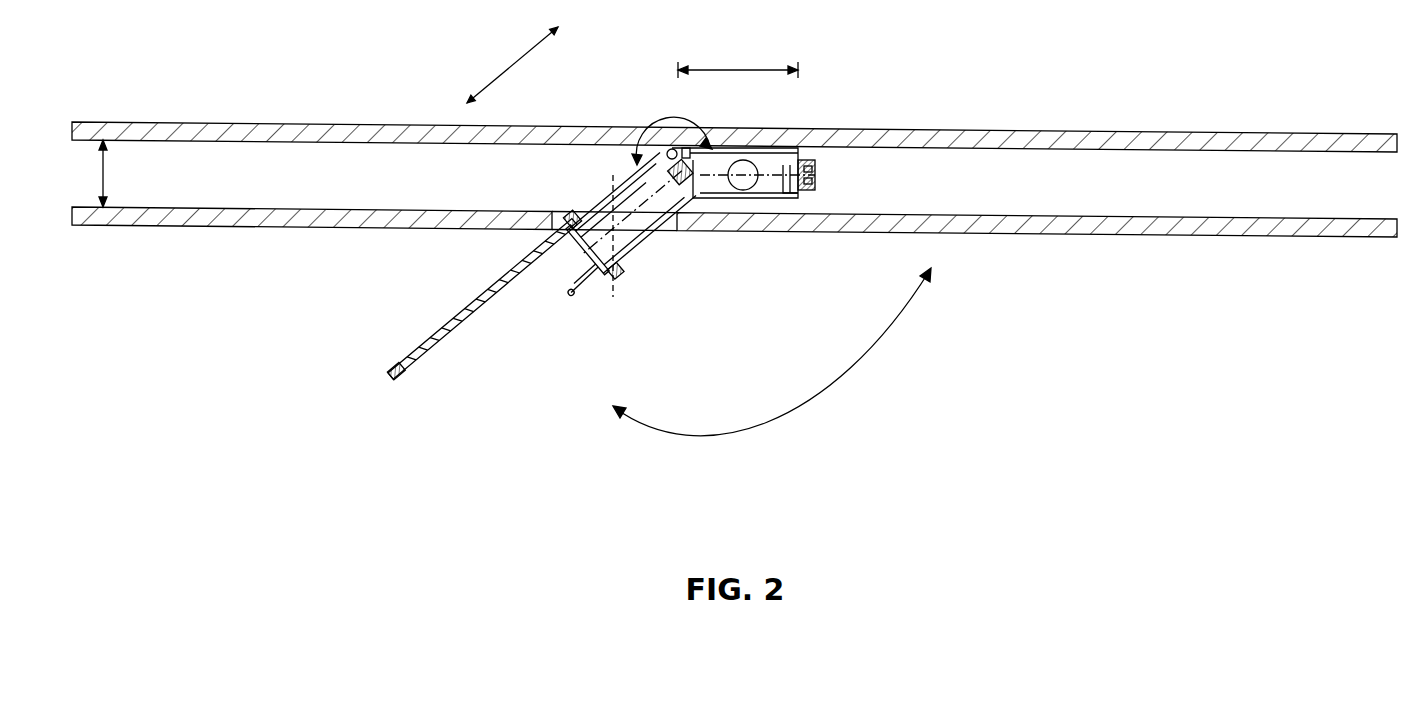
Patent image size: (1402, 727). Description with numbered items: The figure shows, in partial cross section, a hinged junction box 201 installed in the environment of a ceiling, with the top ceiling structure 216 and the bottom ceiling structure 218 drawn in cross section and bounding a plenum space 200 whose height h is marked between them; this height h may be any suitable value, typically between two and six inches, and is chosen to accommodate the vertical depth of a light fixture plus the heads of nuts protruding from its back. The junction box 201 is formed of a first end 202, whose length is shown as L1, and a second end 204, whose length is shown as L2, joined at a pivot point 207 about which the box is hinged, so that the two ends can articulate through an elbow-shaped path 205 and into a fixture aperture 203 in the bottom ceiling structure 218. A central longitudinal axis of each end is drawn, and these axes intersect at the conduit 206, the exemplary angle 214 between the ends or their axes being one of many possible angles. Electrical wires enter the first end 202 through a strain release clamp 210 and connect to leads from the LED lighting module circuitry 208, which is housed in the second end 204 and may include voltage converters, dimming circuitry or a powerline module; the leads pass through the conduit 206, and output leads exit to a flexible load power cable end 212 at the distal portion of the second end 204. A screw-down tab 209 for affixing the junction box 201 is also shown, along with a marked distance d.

The plenum space 200 is at (184, 186).
The hinged junction box 201 is at (593, 182).
The first end 202 is at (770, 195).
The fixture aperture 203 is at (662, 232).
The second end 204 is at (613, 277).
The elbow-shaped path 205 is at (618, 273).
The conduit 206 is at (708, 165).
The pivot point 207 is at (672, 142).
The LED lighting module circuitry 208 is at (621, 240).
The screw-down tab 209 is at (580, 297).
The strain release clamp 210 is at (815, 173).
The load power cable end 212 is at (556, 257).
The angle 214 is at (820, 418).
The top ceiling structure 216 is at (260, 140).
The bottom ceiling structure 218 is at (197, 210).
The height h is at (115, 173).
The clearance distance d is at (560, 228).
The length of the first end L1 is at (738, 51).
The length of the second end L2 is at (512, 62).